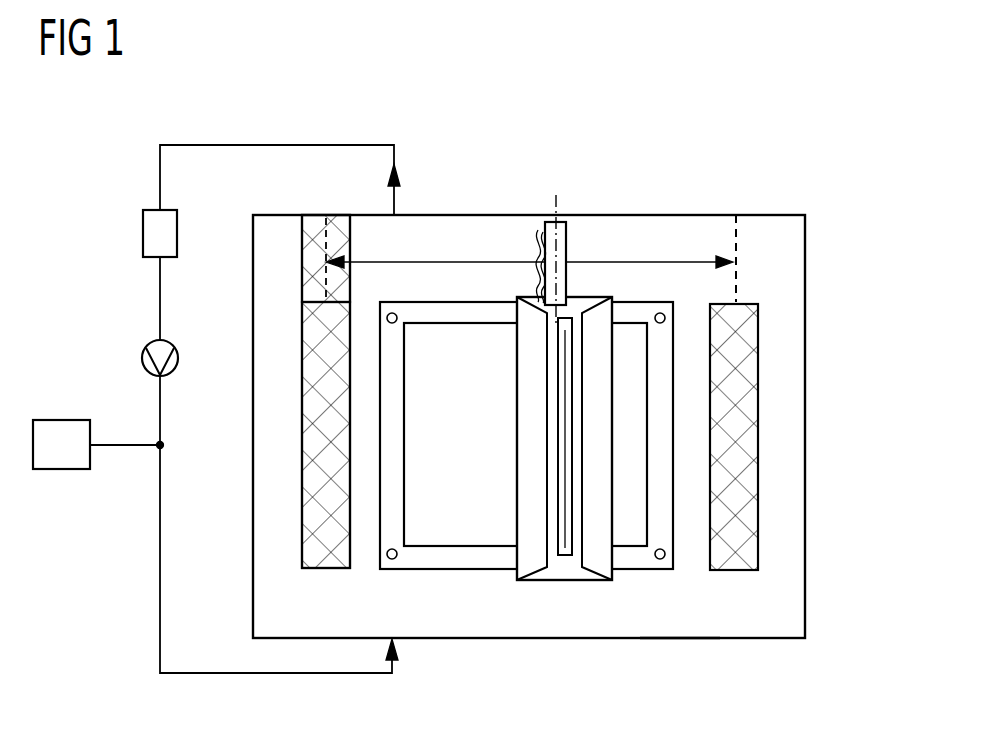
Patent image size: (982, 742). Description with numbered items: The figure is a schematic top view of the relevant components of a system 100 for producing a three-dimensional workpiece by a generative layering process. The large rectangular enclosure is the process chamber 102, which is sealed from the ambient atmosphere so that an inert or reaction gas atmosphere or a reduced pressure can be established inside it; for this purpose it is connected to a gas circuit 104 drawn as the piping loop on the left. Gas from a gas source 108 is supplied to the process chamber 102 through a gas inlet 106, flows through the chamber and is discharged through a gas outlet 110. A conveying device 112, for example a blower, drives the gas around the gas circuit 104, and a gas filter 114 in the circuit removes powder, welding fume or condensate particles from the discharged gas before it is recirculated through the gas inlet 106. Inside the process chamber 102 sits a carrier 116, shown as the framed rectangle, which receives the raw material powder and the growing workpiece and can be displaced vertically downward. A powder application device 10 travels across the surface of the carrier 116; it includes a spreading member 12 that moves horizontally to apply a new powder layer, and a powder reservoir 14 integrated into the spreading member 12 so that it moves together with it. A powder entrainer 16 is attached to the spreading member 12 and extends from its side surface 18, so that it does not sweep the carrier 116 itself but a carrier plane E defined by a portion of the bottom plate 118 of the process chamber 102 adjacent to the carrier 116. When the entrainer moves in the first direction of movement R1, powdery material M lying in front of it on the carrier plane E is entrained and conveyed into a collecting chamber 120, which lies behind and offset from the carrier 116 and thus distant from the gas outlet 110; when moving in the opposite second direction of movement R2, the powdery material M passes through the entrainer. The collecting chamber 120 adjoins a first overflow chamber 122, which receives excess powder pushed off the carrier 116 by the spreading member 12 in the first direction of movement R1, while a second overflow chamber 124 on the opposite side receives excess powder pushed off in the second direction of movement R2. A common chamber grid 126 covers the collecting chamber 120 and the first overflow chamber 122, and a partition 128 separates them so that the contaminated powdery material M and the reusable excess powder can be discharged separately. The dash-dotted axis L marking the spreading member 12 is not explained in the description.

The system 100 is at (112, 563).
The process chamber 102 is at (770, 215).
The gas circuit 104 is at (160, 172).
The gas inlet 106 is at (394, 644).
The gas source 108 is at (51, 420).
The gas outlet 110 is at (397, 215).
The conveying device 112 is at (148, 344).
The gas filter 114 is at (143, 232).
The carrier 116 is at (470, 522).
The bottom plate 118 is at (676, 630).
The collecting chamber 120 is at (338, 215).
The first overflow chamber 122 is at (300, 512).
The second overflow chamber 124 is at (758, 522).
The chamber grid 126 is at (302, 265).
The partition 128 is at (315, 292).
The powder application device 10 is at (537, 598).
The spreading member 12 is at (559, 581).
The powder reservoir 14 is at (564, 556).
The powder entrainer 16 is at (568, 248).
The side surface 18 is at (595, 297).
The carrier plane E is at (496, 236).
The powdery material M is at (533, 232).
The laser axis L is at (558, 221).
The first direction of movement R1 is at (447, 258).
The second direction of movement R2 is at (692, 262).